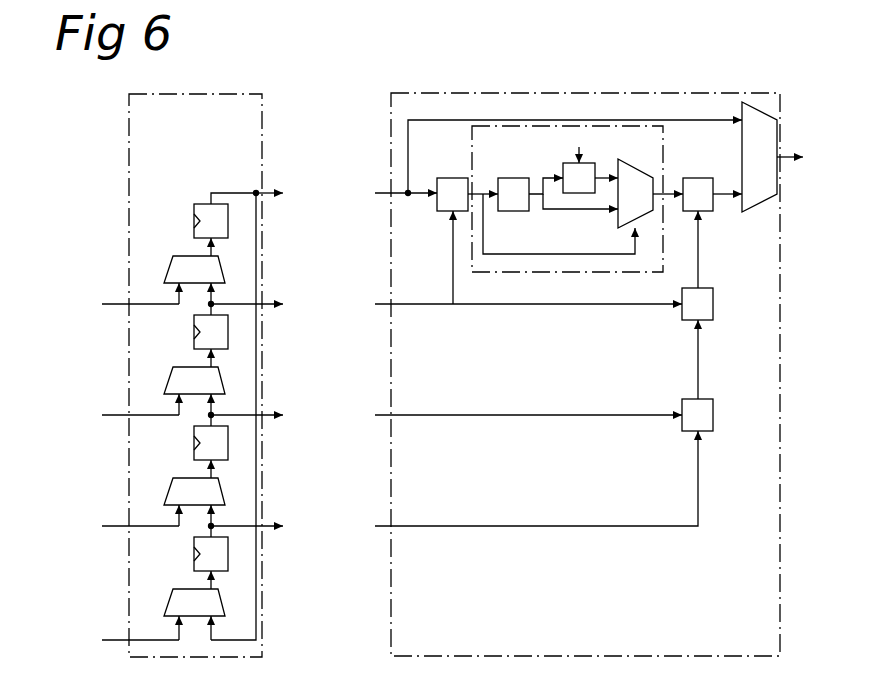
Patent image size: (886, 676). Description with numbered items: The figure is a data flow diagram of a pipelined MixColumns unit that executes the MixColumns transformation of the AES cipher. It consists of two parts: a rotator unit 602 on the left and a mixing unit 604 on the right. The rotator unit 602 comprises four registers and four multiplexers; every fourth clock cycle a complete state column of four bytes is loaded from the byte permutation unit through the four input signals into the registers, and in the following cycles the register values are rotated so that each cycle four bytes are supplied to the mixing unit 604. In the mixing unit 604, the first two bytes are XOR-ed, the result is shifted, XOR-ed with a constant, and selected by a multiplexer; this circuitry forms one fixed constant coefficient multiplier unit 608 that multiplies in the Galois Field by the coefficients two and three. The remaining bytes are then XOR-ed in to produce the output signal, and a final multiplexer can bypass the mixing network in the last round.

The rotator unit 602 is at (228, 94).
The mixing unit 604 is at (555, 93).
The fixed constant coefficient multiplier unit 608 is at (663, 153).